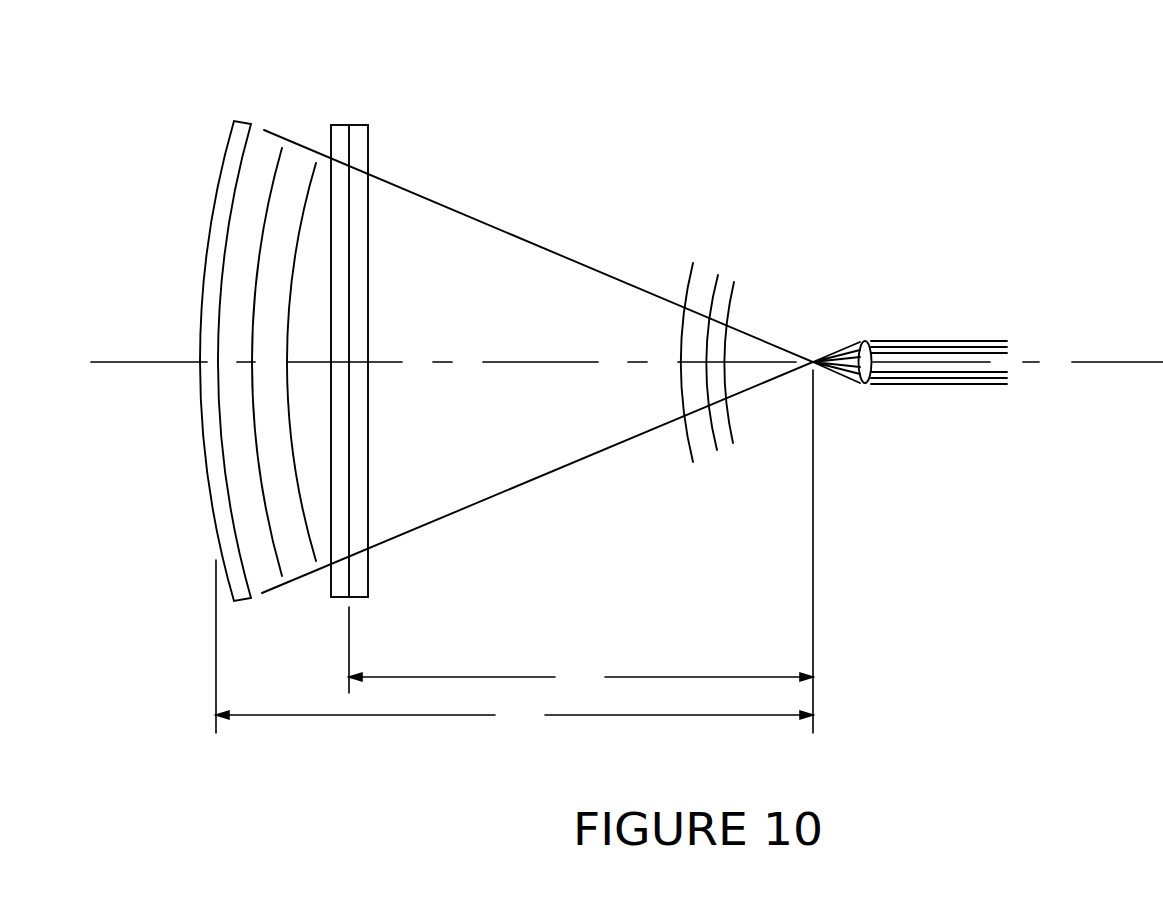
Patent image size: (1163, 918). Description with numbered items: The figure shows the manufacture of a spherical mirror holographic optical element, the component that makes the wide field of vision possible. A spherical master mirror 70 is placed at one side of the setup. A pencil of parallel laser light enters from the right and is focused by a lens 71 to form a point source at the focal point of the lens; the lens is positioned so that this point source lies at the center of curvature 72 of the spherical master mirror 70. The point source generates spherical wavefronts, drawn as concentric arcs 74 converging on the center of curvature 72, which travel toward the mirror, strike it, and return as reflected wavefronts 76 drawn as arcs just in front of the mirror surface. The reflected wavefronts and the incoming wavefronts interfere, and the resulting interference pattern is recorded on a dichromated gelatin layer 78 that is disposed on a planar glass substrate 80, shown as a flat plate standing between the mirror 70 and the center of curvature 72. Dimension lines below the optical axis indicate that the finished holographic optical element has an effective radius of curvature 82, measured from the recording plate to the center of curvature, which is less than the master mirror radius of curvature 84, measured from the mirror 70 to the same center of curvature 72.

The spherical master mirror 70 is at (232, 132).
The lens 71 is at (865, 342).
The center of curvature 72 is at (813, 372).
The converging spherical wavefronts 74 is at (695, 275).
The reflected wavefronts 76 is at (260, 262).
The dichromated gelatin layer 78 is at (357, 122).
The planar glass substrate 80 is at (340, 122).
The effective radius of curvature 82 is at (581, 551).
The master mirror radius of curvature 84 is at (514, 646).